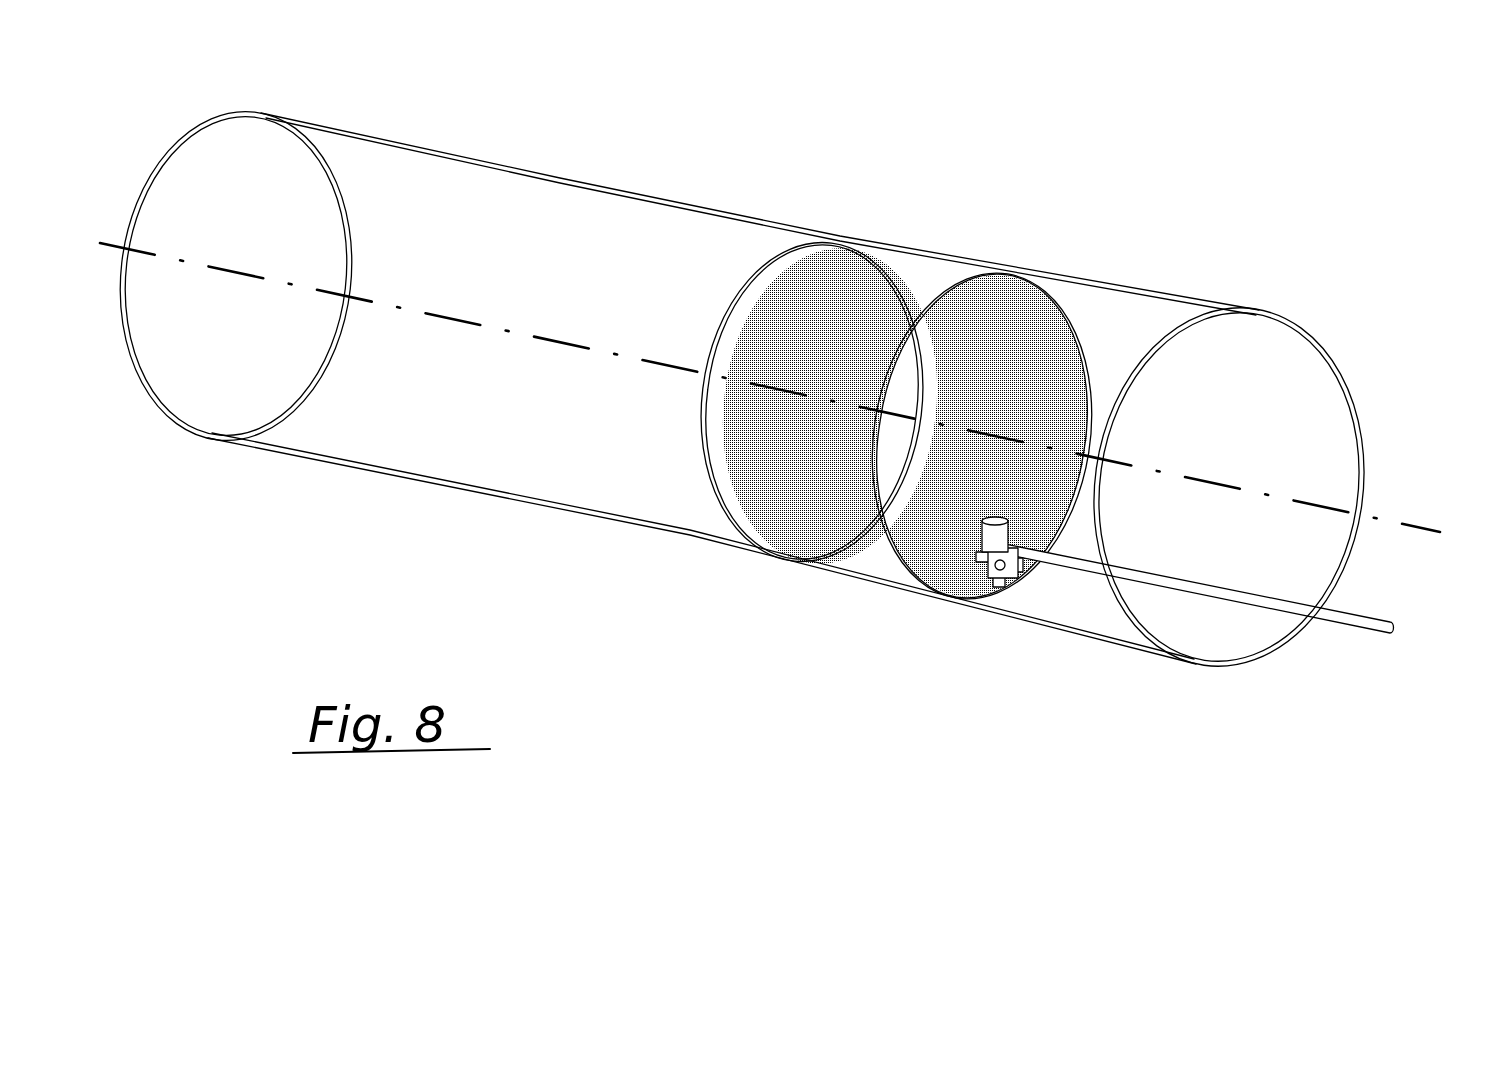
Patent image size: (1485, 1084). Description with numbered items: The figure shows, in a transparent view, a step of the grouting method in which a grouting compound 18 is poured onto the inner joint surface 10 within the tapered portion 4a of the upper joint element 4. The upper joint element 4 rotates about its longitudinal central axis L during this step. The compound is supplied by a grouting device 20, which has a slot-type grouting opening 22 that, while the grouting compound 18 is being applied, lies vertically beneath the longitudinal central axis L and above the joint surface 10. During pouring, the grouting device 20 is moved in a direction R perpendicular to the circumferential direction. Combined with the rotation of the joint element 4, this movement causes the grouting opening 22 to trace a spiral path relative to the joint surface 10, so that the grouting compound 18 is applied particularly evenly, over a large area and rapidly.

The upper joint element 4 is at (583, 184).
The tapered portion 4a is at (1280, 303).
The inner joint surface 10 is at (1198, 650).
The grouting compound 18 is at (1076, 375).
The grouting device 20 is at (1024, 518).
The grouting opening 22 is at (1012, 590).
The longitudinal central axis L is at (124, 244).
The direction of movement R is at (1190, 561).